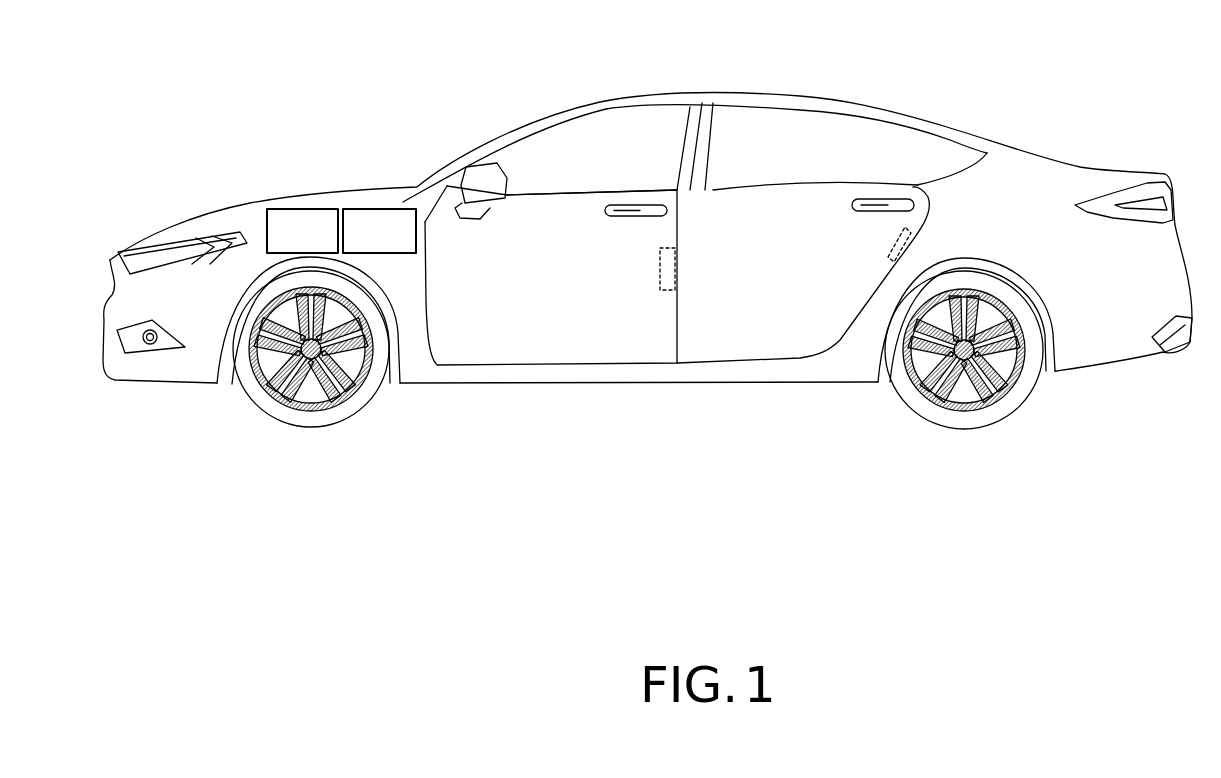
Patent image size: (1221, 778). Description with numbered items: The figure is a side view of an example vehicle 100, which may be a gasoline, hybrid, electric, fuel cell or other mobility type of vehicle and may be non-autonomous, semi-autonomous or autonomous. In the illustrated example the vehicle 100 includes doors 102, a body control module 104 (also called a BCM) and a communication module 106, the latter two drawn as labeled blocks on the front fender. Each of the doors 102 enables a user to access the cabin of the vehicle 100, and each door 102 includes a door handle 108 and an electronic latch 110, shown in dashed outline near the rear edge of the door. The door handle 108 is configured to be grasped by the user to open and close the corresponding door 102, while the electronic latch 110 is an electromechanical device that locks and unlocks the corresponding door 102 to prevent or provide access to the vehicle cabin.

The vehicle 100 is at (1110, 62).
The doors 102 is at (517, 323).
The body control module 104 is at (282, 245).
The communication module 106 is at (359, 245).
The door handle 108 is at (638, 214).
The electronic latch 110 is at (663, 293).